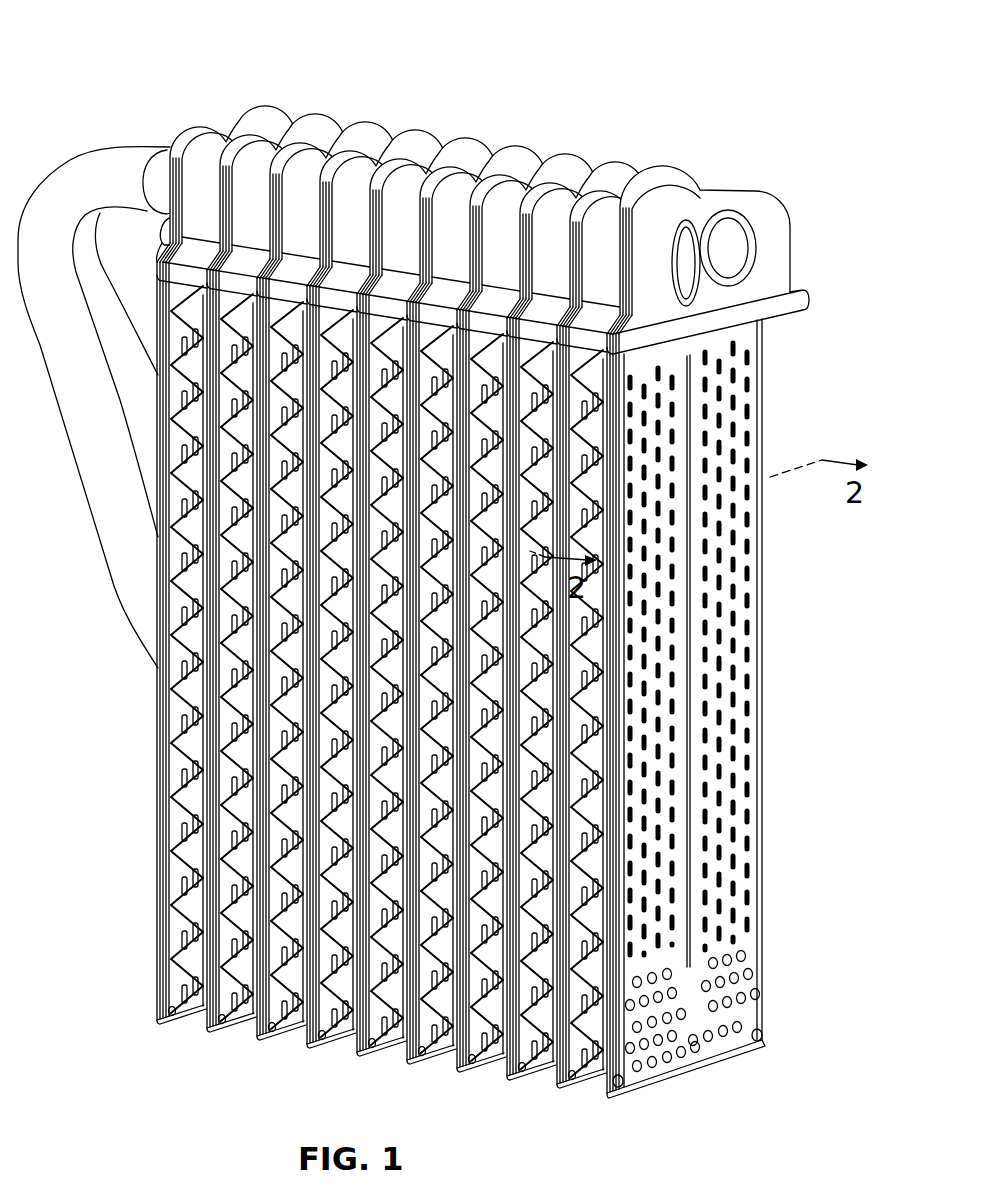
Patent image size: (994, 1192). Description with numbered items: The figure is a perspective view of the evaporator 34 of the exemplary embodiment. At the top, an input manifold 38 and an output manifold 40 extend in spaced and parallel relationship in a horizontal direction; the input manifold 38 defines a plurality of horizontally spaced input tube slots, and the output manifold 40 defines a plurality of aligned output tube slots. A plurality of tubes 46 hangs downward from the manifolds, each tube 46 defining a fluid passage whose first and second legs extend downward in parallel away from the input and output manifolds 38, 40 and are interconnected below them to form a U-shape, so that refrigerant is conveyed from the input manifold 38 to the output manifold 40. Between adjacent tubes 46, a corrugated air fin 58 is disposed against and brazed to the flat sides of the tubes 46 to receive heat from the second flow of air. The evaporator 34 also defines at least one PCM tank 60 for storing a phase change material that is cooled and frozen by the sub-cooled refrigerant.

The evaporator 34 is at (146, 100).
The input manifold 38 is at (683, 250).
The output manifold 40 is at (743, 240).
The tubes 46 is at (318, 745).
The air fin 58 is at (385, 893).
The PCM tank 60 is at (650, 227).